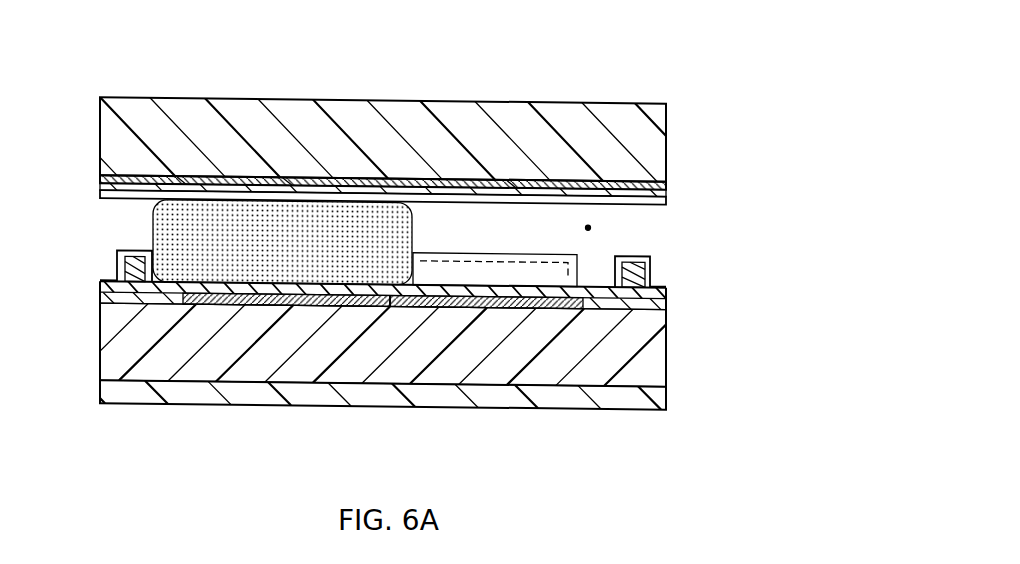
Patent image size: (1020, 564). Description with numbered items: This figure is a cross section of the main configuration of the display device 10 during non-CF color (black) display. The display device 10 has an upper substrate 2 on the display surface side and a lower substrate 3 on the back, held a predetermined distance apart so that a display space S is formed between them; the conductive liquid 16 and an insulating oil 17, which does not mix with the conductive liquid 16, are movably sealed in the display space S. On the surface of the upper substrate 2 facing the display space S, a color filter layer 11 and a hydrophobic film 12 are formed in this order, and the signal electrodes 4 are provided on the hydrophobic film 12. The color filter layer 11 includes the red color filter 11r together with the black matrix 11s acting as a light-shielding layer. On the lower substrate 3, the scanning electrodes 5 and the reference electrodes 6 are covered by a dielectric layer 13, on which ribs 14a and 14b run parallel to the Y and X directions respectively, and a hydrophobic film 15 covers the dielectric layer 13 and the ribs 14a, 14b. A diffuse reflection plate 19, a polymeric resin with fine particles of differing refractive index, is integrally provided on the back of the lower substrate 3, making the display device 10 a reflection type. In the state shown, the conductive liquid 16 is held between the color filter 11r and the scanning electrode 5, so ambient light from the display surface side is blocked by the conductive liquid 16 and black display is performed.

The upper substrate 2 is at (118, 133).
The lower substrate 3 is at (112, 337).
The signal electrodes 4 is at (665, 195).
The scanning electrodes 5 is at (287, 302).
The reference electrodes 6 is at (503, 302).
The display device 10 is at (650, 84).
The color filter layer 11 is at (415, 174).
The red color filter 11r is at (285, 172).
The black matrix 11s is at (180, 172).
The hydrophobic film 12 is at (662, 180).
The dielectric layer 13 is at (660, 295).
The ribs 14a is at (120, 271).
The ribs 14b is at (437, 257).
The hydrophobic film 15 is at (126, 250).
The conductive liquid 16 is at (154, 224).
The insulating oil 17 is at (460, 220).
The diffuse reflection plate 19 is at (188, 393).
The display space S is at (588, 219).